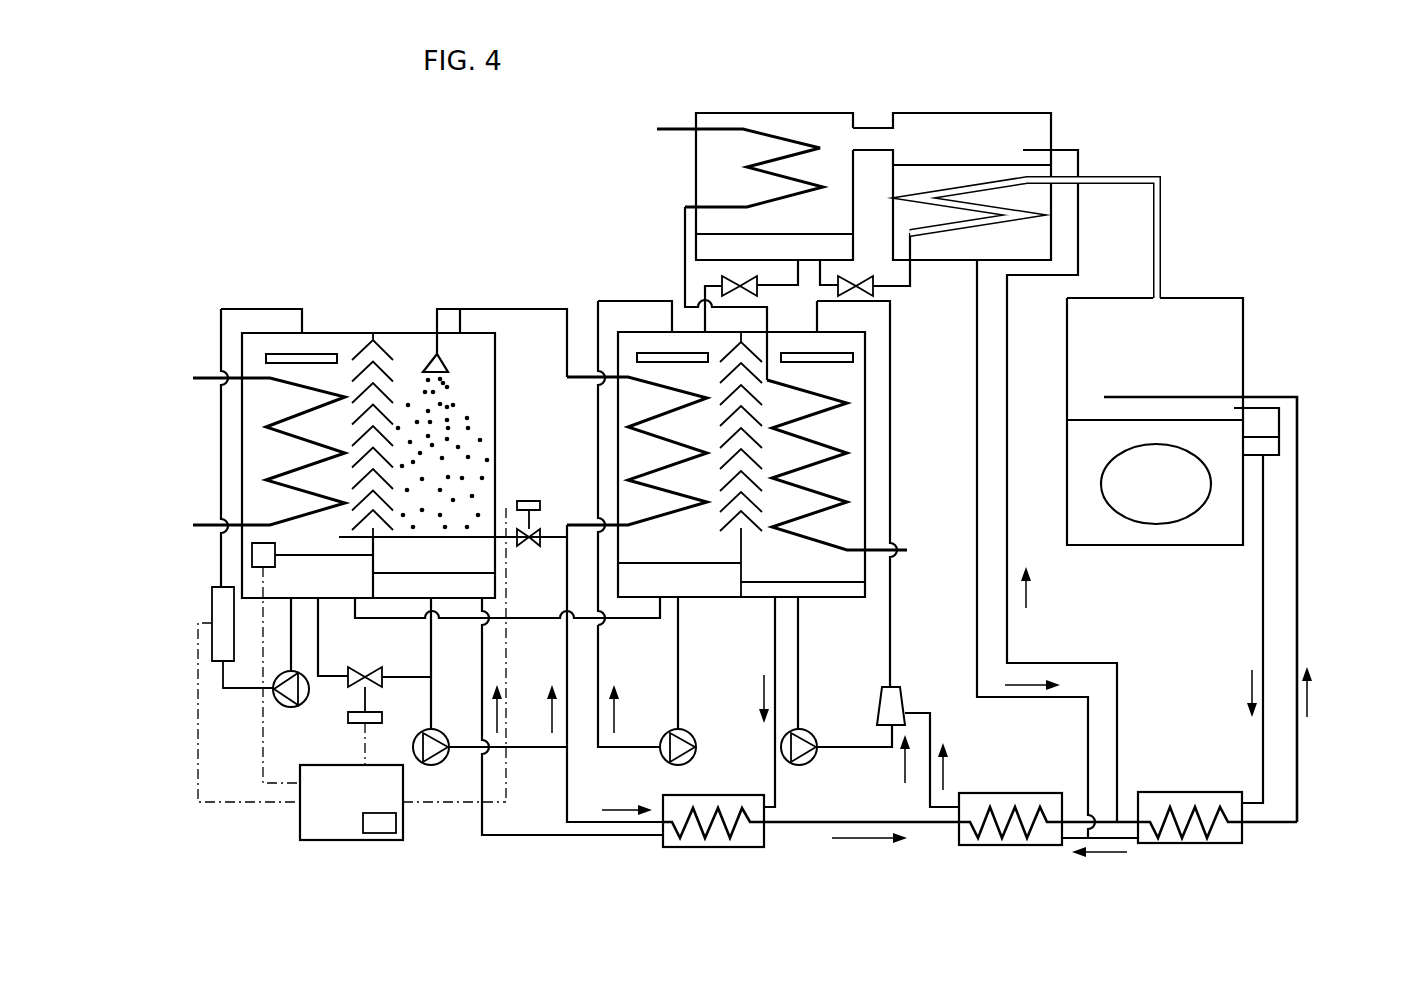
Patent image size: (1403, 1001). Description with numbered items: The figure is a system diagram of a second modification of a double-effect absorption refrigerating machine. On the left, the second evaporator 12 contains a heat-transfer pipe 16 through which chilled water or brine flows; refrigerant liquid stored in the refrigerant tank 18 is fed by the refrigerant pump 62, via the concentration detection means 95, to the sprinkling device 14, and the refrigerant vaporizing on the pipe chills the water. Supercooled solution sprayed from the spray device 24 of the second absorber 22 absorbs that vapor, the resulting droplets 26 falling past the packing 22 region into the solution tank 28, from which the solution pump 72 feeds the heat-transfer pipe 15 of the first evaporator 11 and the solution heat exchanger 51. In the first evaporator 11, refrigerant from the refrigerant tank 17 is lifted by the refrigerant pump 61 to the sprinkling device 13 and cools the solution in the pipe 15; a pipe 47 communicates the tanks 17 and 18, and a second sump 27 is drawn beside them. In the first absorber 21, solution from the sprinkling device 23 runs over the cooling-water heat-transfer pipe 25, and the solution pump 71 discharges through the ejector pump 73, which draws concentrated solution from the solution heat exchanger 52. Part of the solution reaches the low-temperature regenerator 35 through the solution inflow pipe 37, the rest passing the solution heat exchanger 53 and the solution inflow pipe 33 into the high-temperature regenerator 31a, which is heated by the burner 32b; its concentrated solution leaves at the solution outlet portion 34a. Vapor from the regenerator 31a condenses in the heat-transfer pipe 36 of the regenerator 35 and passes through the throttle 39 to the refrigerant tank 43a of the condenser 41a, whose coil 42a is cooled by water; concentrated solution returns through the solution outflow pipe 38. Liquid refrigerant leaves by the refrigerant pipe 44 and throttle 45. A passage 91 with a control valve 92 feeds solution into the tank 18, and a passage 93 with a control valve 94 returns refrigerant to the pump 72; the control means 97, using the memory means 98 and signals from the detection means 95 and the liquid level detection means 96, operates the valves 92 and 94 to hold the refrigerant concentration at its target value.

The first evaporator 11 is at (625, 343).
The second evaporator 12 is at (258, 342).
The sprinkling device 13 is at (652, 352).
The sprinkling device 14 is at (281, 352).
The heat-transfer pipe 15 is at (650, 467).
The heat-transfer pipe 16 is at (295, 462).
The refrigerant tank 17 is at (698, 590).
The refrigerant tank 18 is at (332, 590).
The first absorber 21 is at (850, 340).
The second absorber 22 is at (400, 335).
The solution-sprinkling device 23 is at (853, 357).
The spray device 24 is at (453, 355).
The heat-transfer pipe 25 is at (823, 437).
The droplets 26 is at (447, 428).
The solution sump 27 is at (836, 598).
The solution tank 28 is at (458, 590).
The high-temperature regenerator 31a is at (1202, 315).
The burner 32b is at (1142, 526).
The solution inflow pipe 33 is at (1268, 395).
The solution outlet portion 34a is at (1275, 423).
The low-temperature regenerator 35 is at (1037, 125).
The heat-transfer pipe 36 is at (992, 182).
The solution inflow pipe 37 is at (1083, 162).
The solution outflow pipe 38 is at (977, 612).
The throttle 39 is at (863, 277).
The condenser 41a is at (837, 123).
The heating coil 42a is at (772, 167).
The refrigerant tank 43a is at (807, 247).
The refrigerant pipe 44 is at (777, 280).
The throttle 45 is at (730, 277).
The pipe 47 is at (630, 618).
The solution heat exchanger 51 is at (715, 840).
The solution heat exchanger 52 is at (1015, 845).
The solution heat exchanger 53 is at (1223, 845).
The refrigerant pump 61 is at (697, 737).
The refrigerant pump 62 is at (290, 707).
The solution pump 71 is at (815, 737).
The solution pump 72 is at (431, 765).
The ejector pump 73 is at (905, 702).
The passage 91 is at (467, 527).
The control valve 92 is at (540, 501).
The passage 93 is at (325, 683).
The control valve 94 is at (385, 718).
The concentration detection means 95 is at (212, 612).
The liquid level detection means 96 is at (252, 553).
The control means 97 is at (325, 830).
The memory means 98 is at (385, 833).